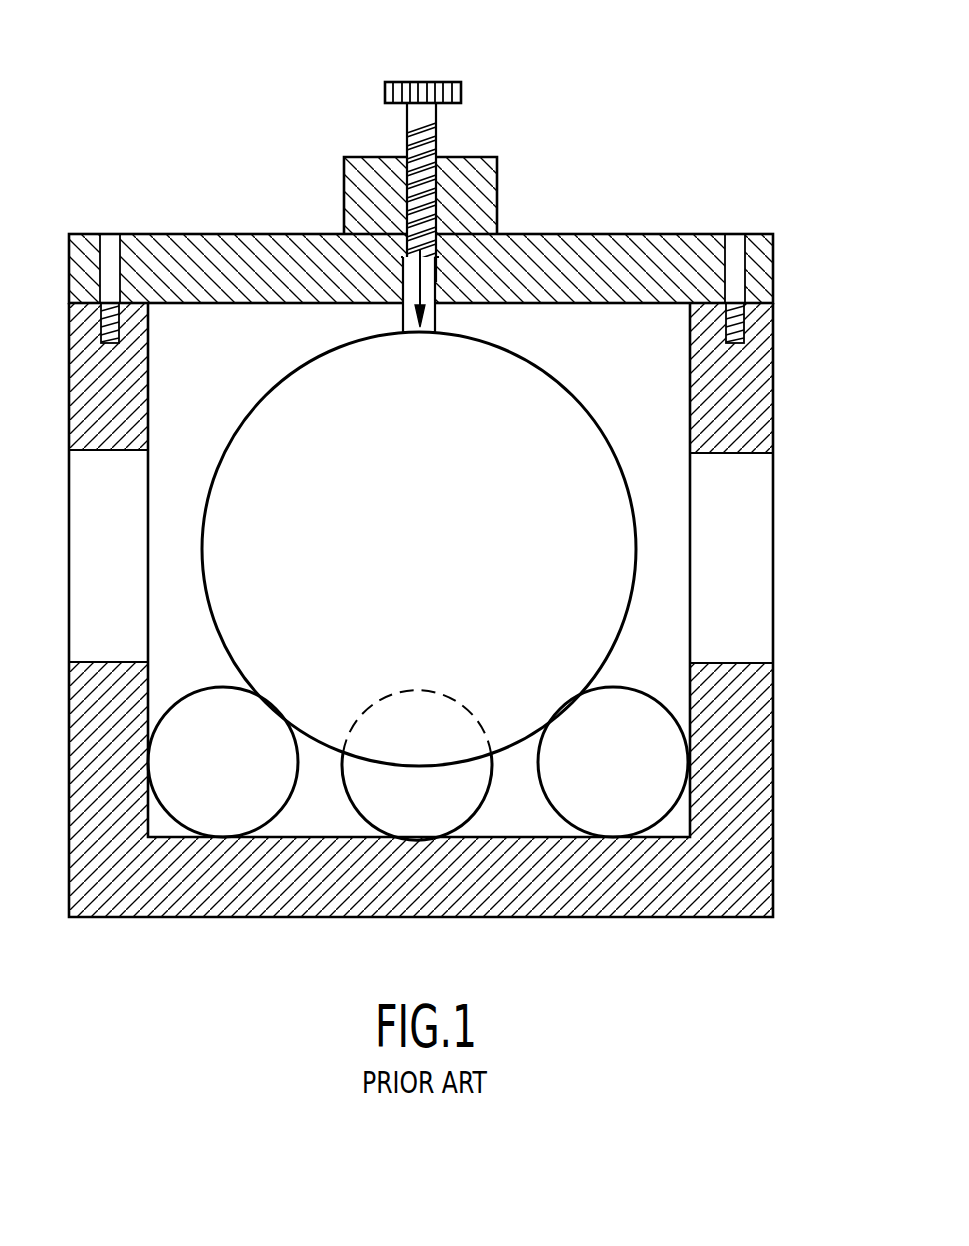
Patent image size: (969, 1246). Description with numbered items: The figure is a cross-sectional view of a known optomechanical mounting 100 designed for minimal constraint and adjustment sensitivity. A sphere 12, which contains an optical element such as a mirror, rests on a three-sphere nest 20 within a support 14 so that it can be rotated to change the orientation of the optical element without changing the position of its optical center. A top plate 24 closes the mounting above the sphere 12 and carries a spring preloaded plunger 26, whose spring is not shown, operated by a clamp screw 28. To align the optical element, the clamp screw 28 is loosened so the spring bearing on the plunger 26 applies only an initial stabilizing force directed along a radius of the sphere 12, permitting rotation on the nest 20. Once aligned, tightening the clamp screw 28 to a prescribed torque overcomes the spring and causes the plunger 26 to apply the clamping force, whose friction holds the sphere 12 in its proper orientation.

The optomechanical mounting 100 is at (163, 171).
The sphere 12 is at (638, 550).
The support 14 is at (727, 872).
The three-sphere nest 20 is at (668, 769).
The top plate 24 is at (773, 276).
The spring preloaded plunger 26 is at (435, 321).
The clamp screw 28 is at (442, 83).